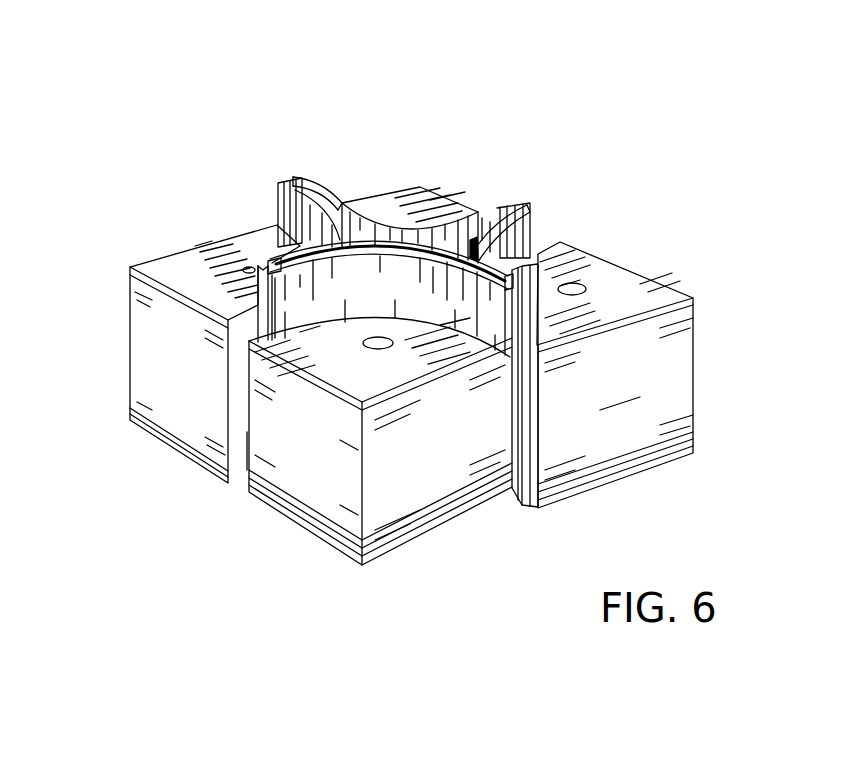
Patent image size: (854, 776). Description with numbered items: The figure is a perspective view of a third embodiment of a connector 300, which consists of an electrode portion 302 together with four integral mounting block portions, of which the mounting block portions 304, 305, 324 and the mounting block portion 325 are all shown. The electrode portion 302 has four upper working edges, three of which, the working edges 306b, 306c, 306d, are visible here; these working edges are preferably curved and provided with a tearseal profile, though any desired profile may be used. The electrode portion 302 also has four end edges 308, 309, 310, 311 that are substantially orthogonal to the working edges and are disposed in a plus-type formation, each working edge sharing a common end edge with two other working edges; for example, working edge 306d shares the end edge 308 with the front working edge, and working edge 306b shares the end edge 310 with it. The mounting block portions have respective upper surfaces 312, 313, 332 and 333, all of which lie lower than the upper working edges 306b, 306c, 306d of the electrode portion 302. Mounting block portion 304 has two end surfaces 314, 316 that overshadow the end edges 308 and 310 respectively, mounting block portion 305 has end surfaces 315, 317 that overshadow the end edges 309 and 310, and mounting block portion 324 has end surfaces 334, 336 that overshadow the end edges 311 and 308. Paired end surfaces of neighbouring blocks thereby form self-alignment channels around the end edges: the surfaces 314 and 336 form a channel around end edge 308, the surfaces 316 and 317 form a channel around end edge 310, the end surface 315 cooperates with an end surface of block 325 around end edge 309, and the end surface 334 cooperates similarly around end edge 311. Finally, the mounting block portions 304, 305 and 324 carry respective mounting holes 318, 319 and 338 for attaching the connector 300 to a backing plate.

The connector 300 is at (158, 167).
The electrode portion 302 is at (447, 230).
The mounting block portion 304 is at (460, 473).
The mounting block portion 305 is at (657, 402).
The upper working edge 306b is at (528, 200).
The upper working edge 306c is at (415, 187).
The upper working edge 306d is at (288, 178).
The end edge 308 is at (271, 278).
The end edge 309 is at (535, 220).
The end edge 310 is at (500, 316).
The end edge 311 is at (277, 183).
The upper surface 312 is at (393, 387).
The upper surface 313 is at (643, 311).
The end surface 314 is at (246, 432).
The end surface 315 is at (558, 243).
The end surface 316 is at (513, 490).
The end surface 317 is at (532, 447).
The mounting hole 318 is at (362, 343).
The mounting hole 319 is at (560, 285).
The mounting block portion 324 is at (200, 388).
The mounting block portion 325 is at (410, 190).
The upper surface 332 is at (178, 255).
The upper surface 333 is at (450, 235).
The end surface 334 is at (277, 216).
The end surface 336 is at (248, 473).
The mounting hole 338 is at (243, 271).